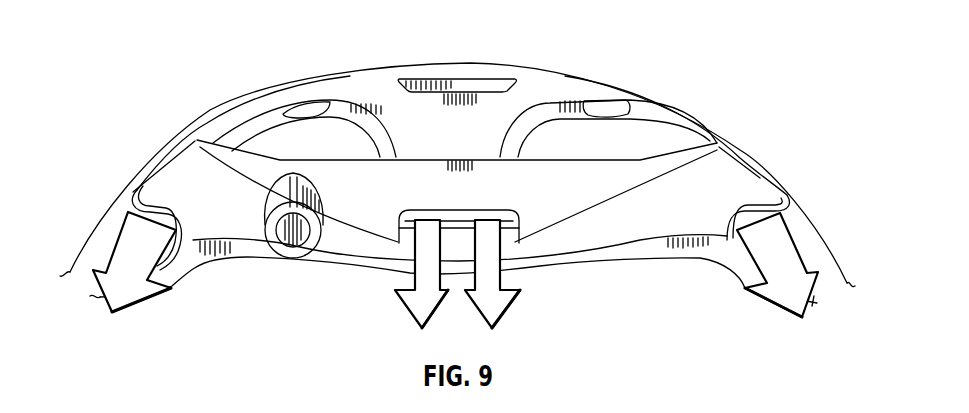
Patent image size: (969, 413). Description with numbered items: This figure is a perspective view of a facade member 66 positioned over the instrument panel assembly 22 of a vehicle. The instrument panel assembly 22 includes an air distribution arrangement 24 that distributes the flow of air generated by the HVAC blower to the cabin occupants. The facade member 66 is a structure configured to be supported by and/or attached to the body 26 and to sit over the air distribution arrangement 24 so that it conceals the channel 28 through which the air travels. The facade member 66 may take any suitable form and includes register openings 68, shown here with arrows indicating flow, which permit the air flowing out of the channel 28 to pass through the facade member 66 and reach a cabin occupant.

The instrument panel assembly 22 is at (523, 62).
The air distribution arrangement 24 is at (389, 120).
The body 26 is at (363, 87).
The channel 28 is at (262, 123).
The facade member 66 is at (743, 178).
The register openings 68 is at (147, 219).